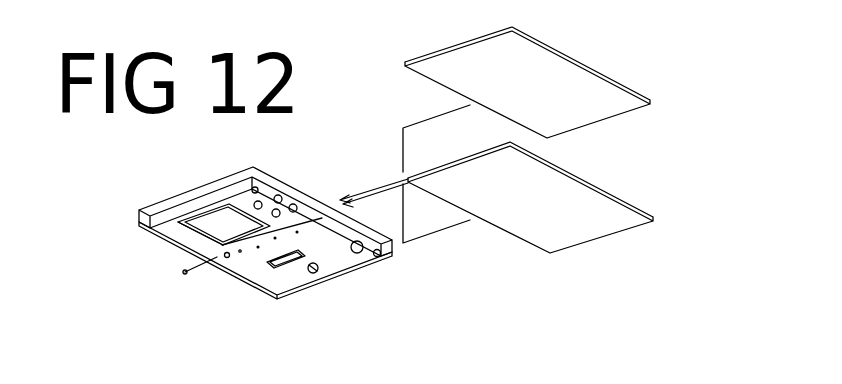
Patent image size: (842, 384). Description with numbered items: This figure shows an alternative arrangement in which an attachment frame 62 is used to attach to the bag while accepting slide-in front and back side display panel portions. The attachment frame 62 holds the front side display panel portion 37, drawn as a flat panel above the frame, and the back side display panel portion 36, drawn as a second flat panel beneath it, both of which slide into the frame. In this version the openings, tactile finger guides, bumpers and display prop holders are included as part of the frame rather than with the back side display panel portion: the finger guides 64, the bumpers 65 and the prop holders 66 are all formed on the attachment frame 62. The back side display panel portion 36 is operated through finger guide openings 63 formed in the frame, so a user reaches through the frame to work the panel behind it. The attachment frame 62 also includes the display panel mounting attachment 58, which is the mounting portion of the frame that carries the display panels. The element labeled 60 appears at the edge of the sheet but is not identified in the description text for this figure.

The housing 60 is at (164, 9).
The front side display panel portion 37 is at (585, 62).
The back side display panel portion 36 is at (507, 245).
The display panel mounting attachment 58 is at (280, 288).
The attachment frame 62 is at (177, 183).
The finger guide openings 63 is at (258, 205).
The finger guides 64 is at (230, 252).
The bumpers 65 is at (378, 257).
The prop holders 66 is at (240, 253).